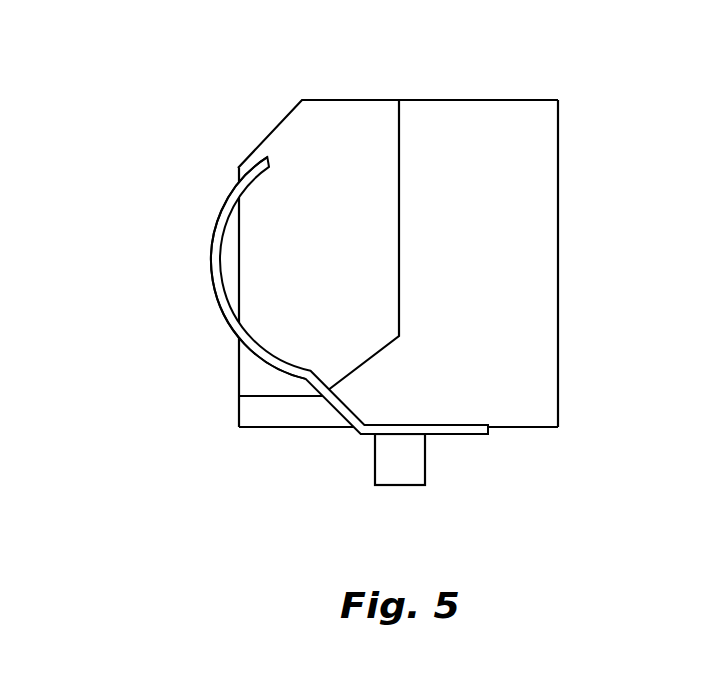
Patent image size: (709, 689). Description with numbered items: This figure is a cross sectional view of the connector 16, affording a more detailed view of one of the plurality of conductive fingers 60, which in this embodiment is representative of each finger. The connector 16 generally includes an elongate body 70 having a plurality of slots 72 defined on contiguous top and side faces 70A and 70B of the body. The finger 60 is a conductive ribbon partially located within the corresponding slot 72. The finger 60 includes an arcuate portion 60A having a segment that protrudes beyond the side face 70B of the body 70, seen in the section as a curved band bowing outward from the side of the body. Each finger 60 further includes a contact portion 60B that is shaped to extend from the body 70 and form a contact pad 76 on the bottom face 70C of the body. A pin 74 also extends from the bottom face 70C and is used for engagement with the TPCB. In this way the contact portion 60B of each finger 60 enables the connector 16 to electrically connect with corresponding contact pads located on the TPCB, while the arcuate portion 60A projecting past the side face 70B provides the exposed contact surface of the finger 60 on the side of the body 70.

The connector 16 is at (402, 295).
The finger 60 is at (296, 260).
The arcuate portion 60A is at (213, 245).
The contact portion 60B is at (402, 423).
The body 70 is at (559, 317).
The top face 70A is at (455, 100).
The side face 70B is at (238, 352).
The bottom face 70C is at (295, 428).
The slot 72 is at (329, 157).
The pin 74 is at (427, 462).
The contact pad 76 is at (458, 438).